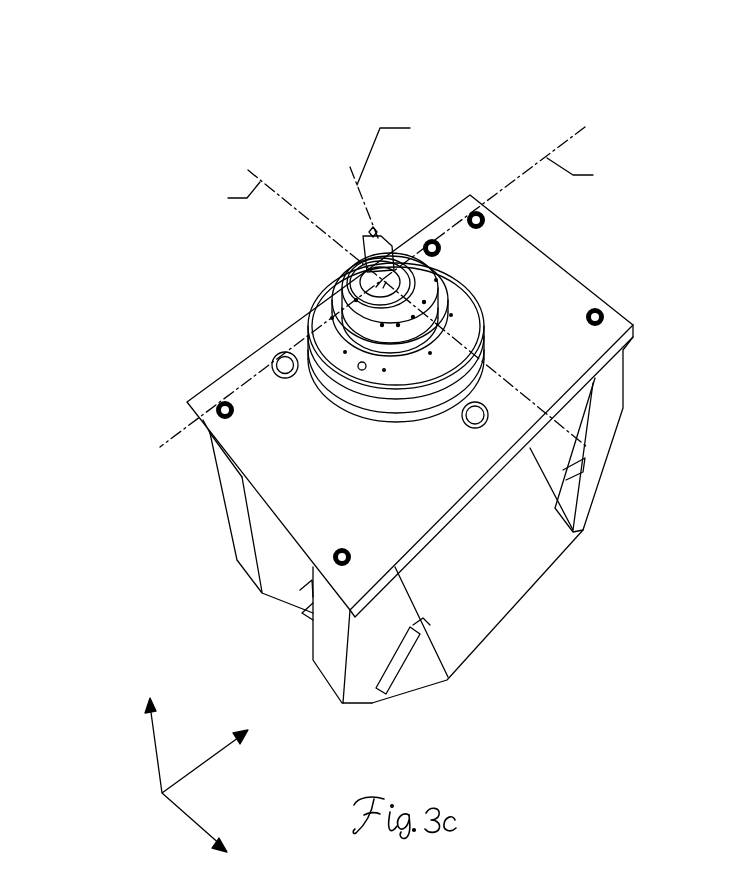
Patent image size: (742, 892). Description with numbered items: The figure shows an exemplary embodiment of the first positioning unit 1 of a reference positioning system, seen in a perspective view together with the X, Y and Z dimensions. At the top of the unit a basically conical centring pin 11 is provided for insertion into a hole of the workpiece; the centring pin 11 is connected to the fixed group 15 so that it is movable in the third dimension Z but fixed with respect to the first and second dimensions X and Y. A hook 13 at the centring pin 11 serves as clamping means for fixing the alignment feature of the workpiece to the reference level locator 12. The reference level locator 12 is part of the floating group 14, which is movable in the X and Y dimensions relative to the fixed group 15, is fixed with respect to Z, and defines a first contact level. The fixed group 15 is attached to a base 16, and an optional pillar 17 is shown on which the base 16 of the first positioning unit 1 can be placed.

The first positioning unit 1 is at (302, 258).
The centring pin 11 is at (378, 236).
The reference level locator 12 is at (417, 270).
The hook 13 is at (370, 280).
The floating group 14 is at (437, 310).
The fixed group 15 is at (407, 403).
The base 16 is at (390, 518).
The pillar 17 is at (288, 638).